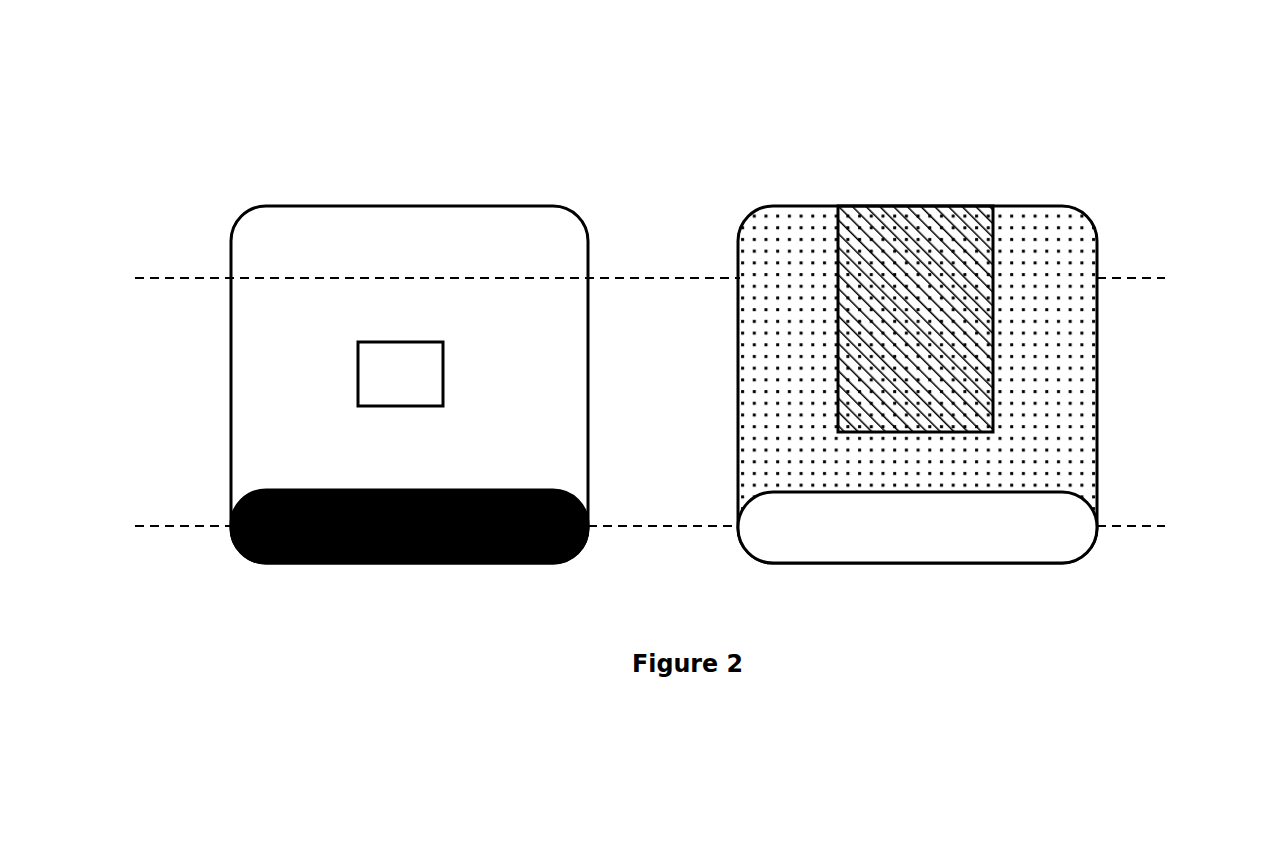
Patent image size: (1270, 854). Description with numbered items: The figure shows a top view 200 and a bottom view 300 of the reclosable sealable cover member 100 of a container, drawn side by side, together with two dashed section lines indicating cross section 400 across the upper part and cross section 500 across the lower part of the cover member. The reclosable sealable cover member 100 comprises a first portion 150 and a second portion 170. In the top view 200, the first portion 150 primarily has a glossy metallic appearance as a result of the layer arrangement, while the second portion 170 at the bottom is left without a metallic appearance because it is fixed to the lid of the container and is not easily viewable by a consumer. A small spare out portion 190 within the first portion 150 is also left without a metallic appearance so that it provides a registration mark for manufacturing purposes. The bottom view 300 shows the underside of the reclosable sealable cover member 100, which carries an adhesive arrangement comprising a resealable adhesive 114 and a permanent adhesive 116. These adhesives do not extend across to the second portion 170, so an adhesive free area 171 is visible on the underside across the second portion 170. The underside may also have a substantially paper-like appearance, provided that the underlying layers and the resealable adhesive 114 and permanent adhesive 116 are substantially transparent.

The reclosable sealable cover member 100 is at (232, 143).
The resealable adhesive 114 is at (1047, 238).
The permanent adhesive 116 is at (918, 205).
The first portion 150 is at (335, 357).
The second portion 170 is at (237, 561).
The adhesive free area 171 is at (1022, 540).
The spare out portion 190 is at (405, 370).
The top view 200 is at (400, 585).
The bottom view 300 is at (907, 575).
The cross section 400 is at (676, 279).
The cross section 500 is at (676, 525).